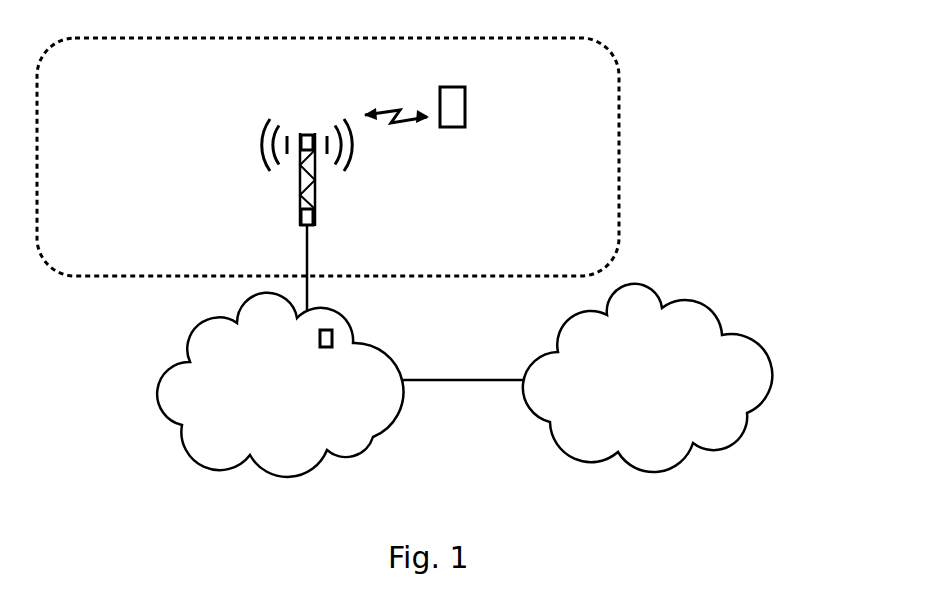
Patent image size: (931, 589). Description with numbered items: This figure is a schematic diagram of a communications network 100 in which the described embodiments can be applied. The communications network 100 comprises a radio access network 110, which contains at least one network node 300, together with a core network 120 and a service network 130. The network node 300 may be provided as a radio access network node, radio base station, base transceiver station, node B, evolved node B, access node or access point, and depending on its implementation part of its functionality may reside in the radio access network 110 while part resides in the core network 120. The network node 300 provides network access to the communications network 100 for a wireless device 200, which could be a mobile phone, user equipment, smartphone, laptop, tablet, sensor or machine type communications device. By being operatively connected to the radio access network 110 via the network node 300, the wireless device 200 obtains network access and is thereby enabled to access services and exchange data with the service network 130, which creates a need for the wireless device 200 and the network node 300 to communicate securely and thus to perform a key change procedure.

The communications network 100 is at (724, 61).
The radio access network 110 is at (130, 86).
The core network 120 is at (287, 362).
The service network 130 is at (664, 346).
The wireless device 200 is at (447, 127).
The network node 300 is at (298, 220).